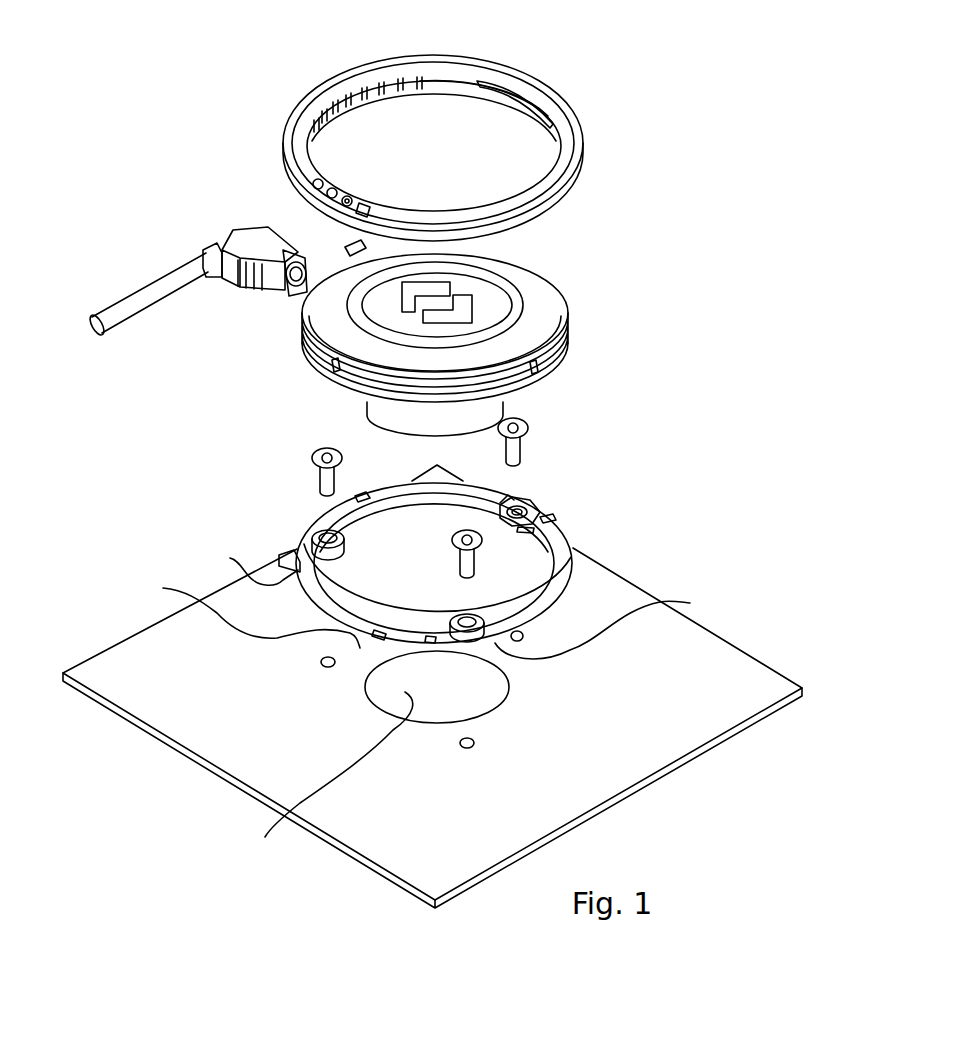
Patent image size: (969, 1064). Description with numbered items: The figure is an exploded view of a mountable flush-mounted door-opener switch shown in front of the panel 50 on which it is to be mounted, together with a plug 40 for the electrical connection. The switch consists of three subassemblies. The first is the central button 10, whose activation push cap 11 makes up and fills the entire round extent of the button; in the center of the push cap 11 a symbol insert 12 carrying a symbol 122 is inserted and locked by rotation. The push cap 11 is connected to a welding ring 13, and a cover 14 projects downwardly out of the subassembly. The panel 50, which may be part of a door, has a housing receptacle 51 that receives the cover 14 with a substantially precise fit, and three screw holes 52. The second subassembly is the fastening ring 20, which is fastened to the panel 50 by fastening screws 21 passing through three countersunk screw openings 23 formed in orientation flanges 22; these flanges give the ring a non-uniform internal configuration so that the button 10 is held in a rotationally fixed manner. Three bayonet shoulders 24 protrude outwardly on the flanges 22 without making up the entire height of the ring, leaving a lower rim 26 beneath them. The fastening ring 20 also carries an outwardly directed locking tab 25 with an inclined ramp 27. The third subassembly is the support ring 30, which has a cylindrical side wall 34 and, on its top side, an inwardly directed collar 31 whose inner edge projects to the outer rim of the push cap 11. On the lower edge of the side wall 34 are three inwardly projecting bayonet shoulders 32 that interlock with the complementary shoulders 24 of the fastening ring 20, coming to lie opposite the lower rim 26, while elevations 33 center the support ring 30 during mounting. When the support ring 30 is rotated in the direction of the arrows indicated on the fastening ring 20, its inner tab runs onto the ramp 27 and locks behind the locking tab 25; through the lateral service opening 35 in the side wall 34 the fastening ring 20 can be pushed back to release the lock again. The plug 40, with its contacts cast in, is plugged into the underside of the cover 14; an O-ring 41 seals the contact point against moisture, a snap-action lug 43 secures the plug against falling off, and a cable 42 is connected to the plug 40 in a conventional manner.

The button 10 is at (479, 331).
The push cap 11 is at (507, 352).
The symbol insert 12 is at (529, 275).
The symbol 122 is at (482, 302).
The welding ring 13 is at (527, 392).
The cover 14 is at (385, 418).
The fastening ring 20 is at (479, 538).
The fastening screws 21 is at (305, 478).
The orientation flanges 22 is at (543, 508).
The screw openings 23 is at (533, 508).
The bayonet shoulders 24 is at (278, 556).
The locking tab 25 is at (380, 643).
The lower rim 26 is at (232, 560).
The ramp 27 is at (165, 588).
The support ring 30 is at (458, 123).
The collar 31 is at (525, 78).
The bayonet shoulders 32 is at (487, 88).
The elevations 33 is at (384, 96).
The side wall 34 is at (572, 201).
The service opening 35 is at (341, 255).
The plug 40 is at (197, 271).
The O-ring 41 is at (278, 290).
The cable 42 is at (180, 281).
The snap-action lug 43 is at (293, 291).
The panel 50 is at (432, 686).
The housing receptacle 51 is at (265, 837).
The screw holes 52 is at (321, 664).